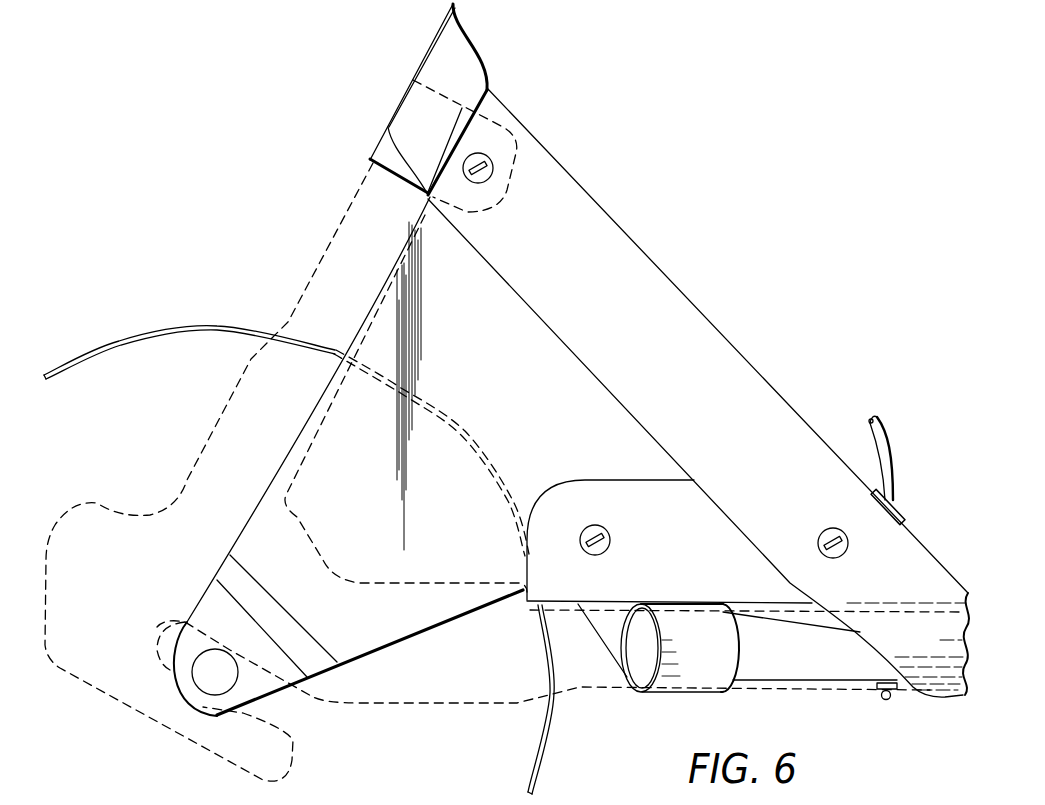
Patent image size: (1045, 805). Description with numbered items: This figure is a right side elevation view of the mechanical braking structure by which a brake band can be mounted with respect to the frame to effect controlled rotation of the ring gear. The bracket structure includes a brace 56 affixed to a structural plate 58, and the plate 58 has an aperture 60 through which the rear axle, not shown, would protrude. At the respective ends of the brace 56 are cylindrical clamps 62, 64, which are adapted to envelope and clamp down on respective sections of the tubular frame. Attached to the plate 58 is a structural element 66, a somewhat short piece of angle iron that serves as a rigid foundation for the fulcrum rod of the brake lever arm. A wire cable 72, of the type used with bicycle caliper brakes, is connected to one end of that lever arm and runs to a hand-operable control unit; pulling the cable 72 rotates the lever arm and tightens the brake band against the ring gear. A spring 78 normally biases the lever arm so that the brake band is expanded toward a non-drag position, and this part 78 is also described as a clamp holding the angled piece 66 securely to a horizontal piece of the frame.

The brace 56 is at (716, 342).
The structural plate 58 is at (428, 322).
The aperture 60 is at (201, 686).
The cylindrical clamp 62 is at (502, 48).
The cylindrical clamp 64 is at (935, 703).
The structural element 66 is at (607, 488).
The wire cable 72 is at (889, 462).
The spring 78 is at (707, 678).